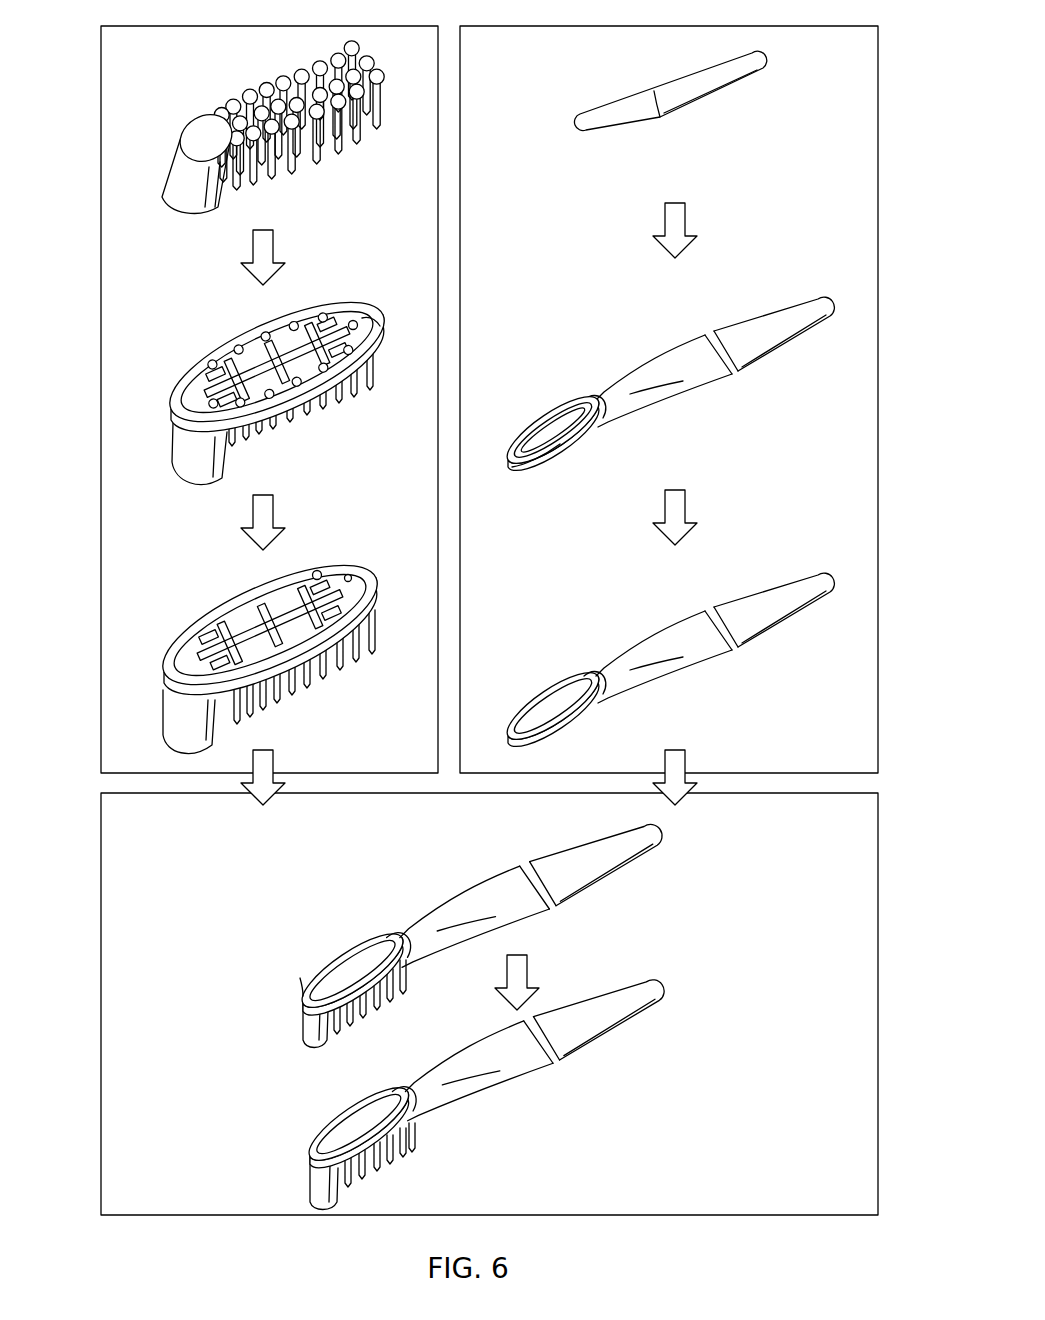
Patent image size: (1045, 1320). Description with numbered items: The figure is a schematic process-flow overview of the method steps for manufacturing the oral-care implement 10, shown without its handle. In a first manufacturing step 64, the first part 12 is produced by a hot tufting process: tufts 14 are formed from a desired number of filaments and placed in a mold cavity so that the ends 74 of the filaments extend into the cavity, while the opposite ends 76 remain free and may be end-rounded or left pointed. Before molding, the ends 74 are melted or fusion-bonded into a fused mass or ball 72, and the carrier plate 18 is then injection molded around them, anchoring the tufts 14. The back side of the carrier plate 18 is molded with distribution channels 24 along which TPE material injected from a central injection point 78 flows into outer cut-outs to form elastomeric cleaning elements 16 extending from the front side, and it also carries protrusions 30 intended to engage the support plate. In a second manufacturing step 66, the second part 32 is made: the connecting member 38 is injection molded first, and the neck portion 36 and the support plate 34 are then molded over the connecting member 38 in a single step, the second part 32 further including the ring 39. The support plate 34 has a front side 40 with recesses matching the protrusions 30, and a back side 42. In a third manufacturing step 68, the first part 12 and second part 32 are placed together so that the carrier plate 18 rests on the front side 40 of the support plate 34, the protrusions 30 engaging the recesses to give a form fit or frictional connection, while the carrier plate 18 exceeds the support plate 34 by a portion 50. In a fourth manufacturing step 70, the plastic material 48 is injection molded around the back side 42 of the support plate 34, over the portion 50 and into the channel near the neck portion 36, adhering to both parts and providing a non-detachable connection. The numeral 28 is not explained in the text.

The oral-care implement 10 is at (443, 1095).
The first part 12 is at (261, 625).
The tufts 14 is at (288, 122).
The cleaning elements 16 is at (330, 686).
The carrier plate 18 is at (287, 367).
The distribution channels 24 is at (352, 324).
The locating pin 28 is at (350, 575).
The protrusions 30 is at (323, 314).
The second part 32 is at (660, 631).
The support plate 34 is at (526, 434).
The neck portion 36 is at (660, 368).
The connecting member 38 is at (762, 59).
The ring 39 is at (712, 614).
The front side of support plate 40 is at (560, 452).
The back side of support plate 42 is at (557, 428).
The plastic material 48 is at (350, 1132).
The portion 50 is at (300, 982).
The first manufacturing step 64 is at (101, 63).
The second manufacturing step 66 is at (878, 63).
The third manufacturing step 68 is at (537, 932).
The fourth manufacturing step 70 is at (538, 1095).
The fused mass or ball 72 is at (345, 46).
The ends of filaments 74 is at (268, 82).
The opposite ends of filaments 76 is at (324, 148).
The central injection point 78 is at (356, 323).